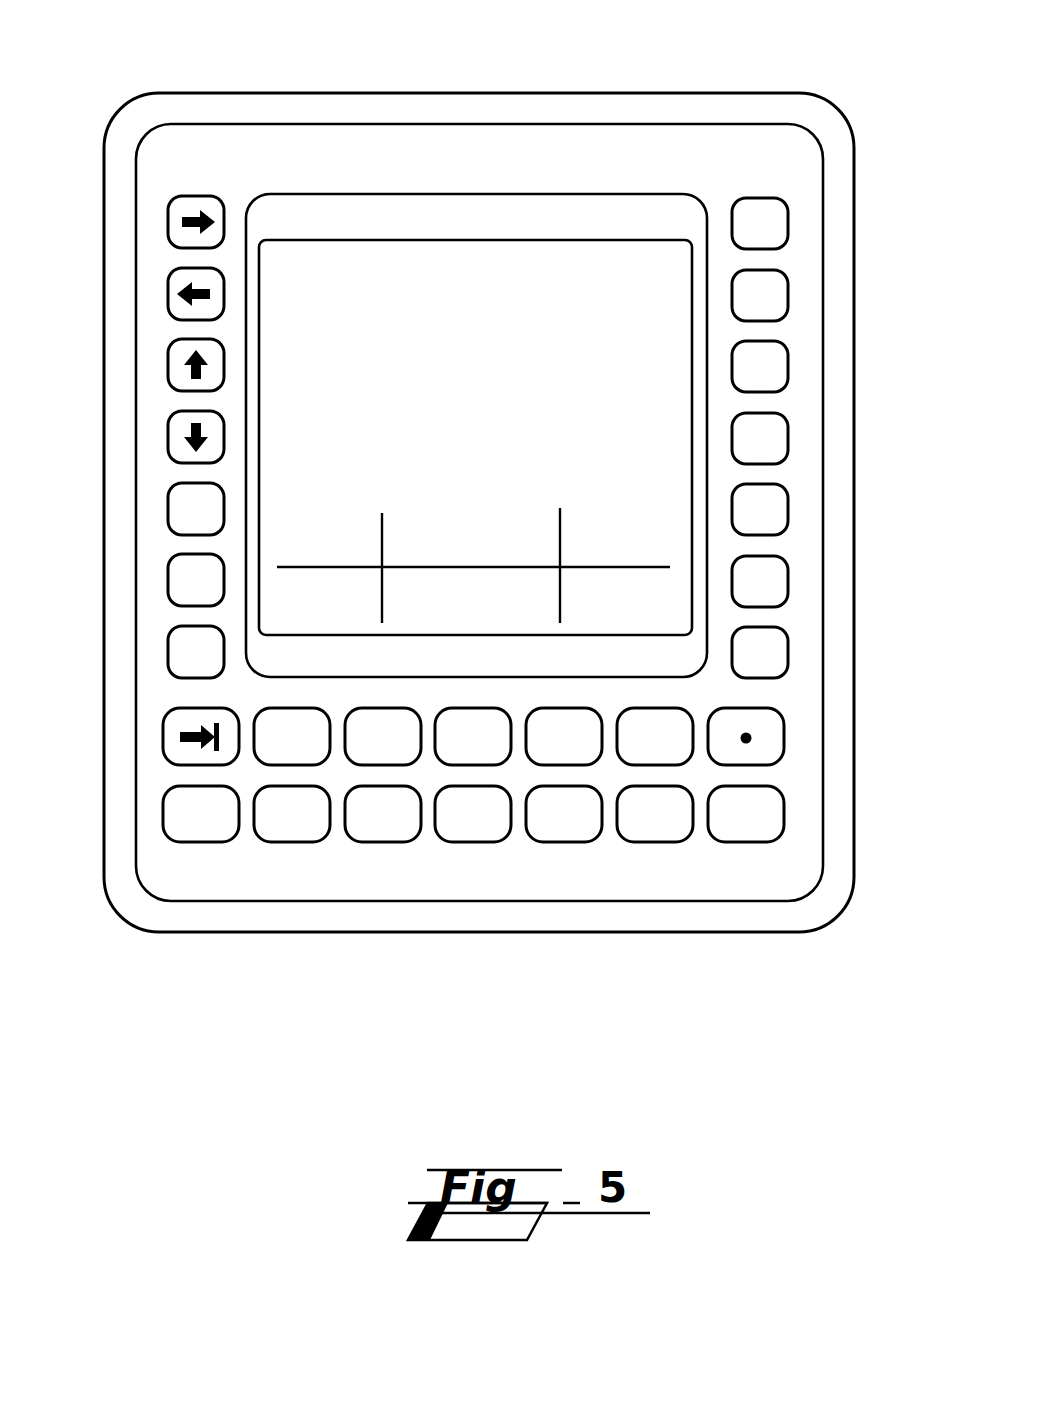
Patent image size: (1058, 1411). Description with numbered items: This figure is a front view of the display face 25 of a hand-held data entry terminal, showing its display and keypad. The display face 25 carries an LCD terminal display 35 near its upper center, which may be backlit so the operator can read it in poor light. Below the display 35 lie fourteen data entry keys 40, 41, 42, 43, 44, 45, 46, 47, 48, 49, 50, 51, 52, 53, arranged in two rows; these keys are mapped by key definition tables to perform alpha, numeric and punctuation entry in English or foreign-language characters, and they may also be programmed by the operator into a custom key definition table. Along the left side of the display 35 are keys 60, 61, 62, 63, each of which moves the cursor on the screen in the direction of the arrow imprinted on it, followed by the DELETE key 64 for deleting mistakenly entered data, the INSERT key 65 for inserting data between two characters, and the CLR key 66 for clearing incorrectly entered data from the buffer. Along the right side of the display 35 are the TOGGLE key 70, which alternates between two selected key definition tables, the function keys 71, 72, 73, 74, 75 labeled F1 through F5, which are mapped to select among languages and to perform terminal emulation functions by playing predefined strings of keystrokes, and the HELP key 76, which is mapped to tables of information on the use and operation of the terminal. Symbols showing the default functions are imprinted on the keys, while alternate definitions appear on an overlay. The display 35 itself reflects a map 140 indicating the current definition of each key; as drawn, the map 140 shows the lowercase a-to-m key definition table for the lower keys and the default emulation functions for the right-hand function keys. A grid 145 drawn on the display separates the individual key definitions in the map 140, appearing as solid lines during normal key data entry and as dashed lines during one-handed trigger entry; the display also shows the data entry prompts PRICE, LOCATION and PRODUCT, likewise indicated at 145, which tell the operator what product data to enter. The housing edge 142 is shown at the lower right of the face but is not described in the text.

The display face 25 is at (438, 165).
The LCD terminal display 35 is at (383, 252).
The data entry key 40 is at (163, 737).
The data entry key 41 is at (260, 737).
The data entry key 42 is at (350, 737).
The data entry key 43 is at (441, 737).
The data entry key 44 is at (533, 737).
The data entry key 45 is at (621, 737).
The data entry key 46 is at (713, 737).
The data entry key 47 is at (201, 842).
The data entry key 48 is at (293, 842).
The data entry key 49 is at (385, 842).
The data entry key 50 is at (476, 842).
The data entry key 51 is at (567, 842).
The data entry key 52 is at (657, 842).
The data entry key 53 is at (748, 842).
The cursor key 60 is at (168, 222).
The cursor key 61 is at (168, 294).
The cursor key 62 is at (168, 365).
The cursor key 63 is at (168, 437).
The DELETE key 64 is at (168, 509).
The INSERT key 65 is at (168, 580).
The CLR key 66 is at (168, 652).
The TOGGLE key 70 is at (788, 224).
The function key F1 71 is at (788, 295).
The function key F2 72 is at (788, 367).
The function key F3 73 is at (788, 439).
The function key F4 74 is at (788, 510).
The function key F5 75 is at (788, 581).
The HELP key 76 is at (788, 653).
The map 140 is at (297, 608).
The housing 142 is at (854, 833).
The grid 145 is at (443, 382).